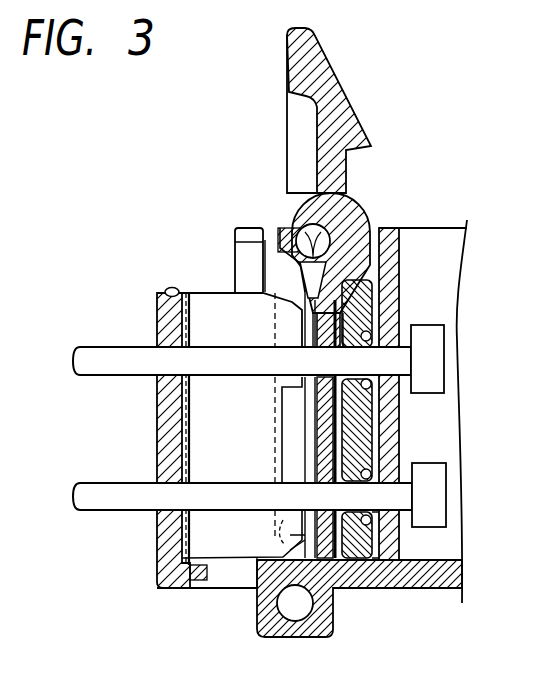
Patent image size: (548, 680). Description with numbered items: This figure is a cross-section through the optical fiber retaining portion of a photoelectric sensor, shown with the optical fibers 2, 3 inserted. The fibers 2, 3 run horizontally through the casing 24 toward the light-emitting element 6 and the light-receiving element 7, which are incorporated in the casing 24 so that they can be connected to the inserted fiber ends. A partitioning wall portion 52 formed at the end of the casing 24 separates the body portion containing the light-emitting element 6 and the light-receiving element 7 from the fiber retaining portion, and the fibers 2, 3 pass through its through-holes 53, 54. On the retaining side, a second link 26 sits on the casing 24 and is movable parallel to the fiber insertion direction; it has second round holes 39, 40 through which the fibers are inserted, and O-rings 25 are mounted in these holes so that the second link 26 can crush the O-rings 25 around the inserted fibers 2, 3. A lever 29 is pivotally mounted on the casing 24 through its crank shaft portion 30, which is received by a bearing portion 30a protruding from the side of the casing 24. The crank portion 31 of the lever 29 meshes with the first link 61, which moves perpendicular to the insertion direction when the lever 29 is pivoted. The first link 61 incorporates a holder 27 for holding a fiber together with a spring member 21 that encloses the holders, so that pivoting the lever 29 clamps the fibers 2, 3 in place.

The optical fiber 2 is at (90, 482).
The optical fiber 3 is at (93, 343).
The light-emitting element 6 is at (432, 497).
The light-receiving element 7 is at (432, 355).
The spring member 21 is at (172, 289).
The casing 24 is at (444, 580).
The O-ring 25 is at (390, 545).
The second link 26 is at (357, 550).
The holder 27 is at (215, 318).
The lever 29 is at (335, 82).
The crank shaft portion 30 is at (351, 236).
The bearing portion 30a is at (296, 230).
The crank portion 31 is at (280, 230).
The second round hole 39 is at (335, 415).
The second round hole 40 is at (335, 458).
The partitioning wall portion 52 is at (394, 264).
The through-hole 53 is at (380, 398).
The through-hole 54 is at (392, 503).
The first link 61 is at (362, 222).